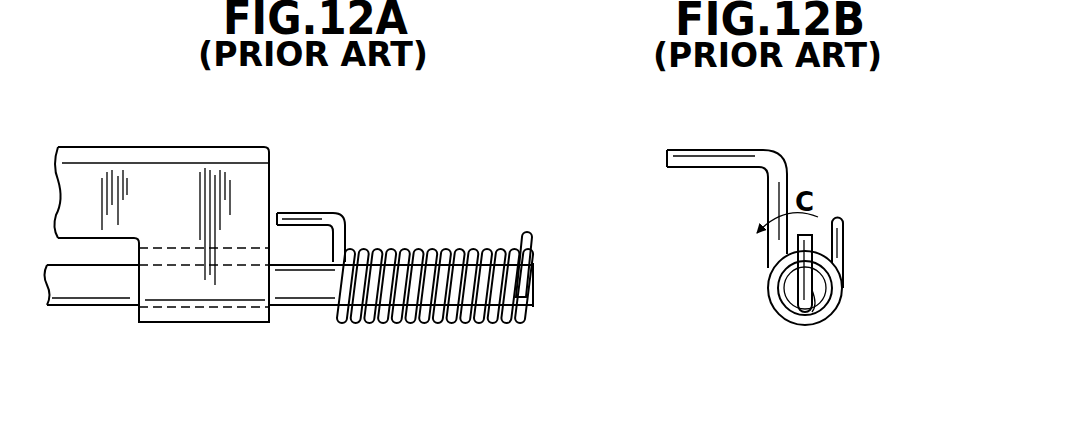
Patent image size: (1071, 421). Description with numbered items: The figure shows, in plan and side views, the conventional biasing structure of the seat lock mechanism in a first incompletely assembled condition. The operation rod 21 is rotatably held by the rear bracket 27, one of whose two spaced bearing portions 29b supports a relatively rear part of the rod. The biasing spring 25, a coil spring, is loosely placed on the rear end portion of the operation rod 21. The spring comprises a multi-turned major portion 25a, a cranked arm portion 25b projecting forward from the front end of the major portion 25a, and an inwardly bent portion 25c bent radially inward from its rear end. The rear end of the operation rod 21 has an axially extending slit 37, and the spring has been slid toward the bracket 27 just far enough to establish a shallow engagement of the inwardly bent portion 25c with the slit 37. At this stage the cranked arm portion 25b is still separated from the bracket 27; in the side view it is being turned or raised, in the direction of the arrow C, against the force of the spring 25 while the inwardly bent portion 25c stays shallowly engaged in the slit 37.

In FIG. 12A, the operation rod 21 is at (308, 307).
In FIG. 12A, the biasing spring 25 is at (450, 290).
In FIG. 12B, the biasing spring 25 is at (820, 319).
In FIG. 12A, the multi-turned major portion 25a is at (428, 247).
In FIG. 12B, the multi-turned major portion 25a is at (838, 297).
In FIG. 12A, the cranked arm portion 25b is at (312, 215).
In FIG. 12B, the cranked arm portion 25b is at (838, 240).
In FIG. 12A, the inwardly bent portion 25c is at (530, 236).
In FIG. 12B, the inwardly bent portion 25c is at (800, 292).
In FIG. 12A, the rear bracket 27 is at (222, 147).
In FIG. 12B, the rear bracket 27 is at (720, 150).
In FIG. 12A, the bearing portion 29b is at (162, 322).
In FIG. 12B, the slit 37 is at (817, 317).